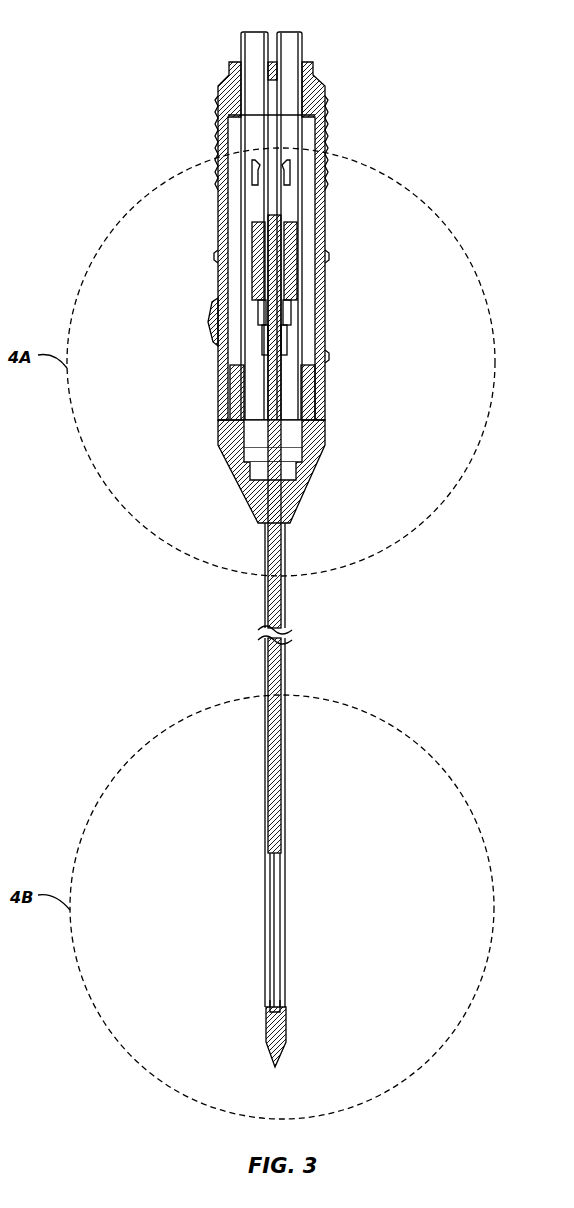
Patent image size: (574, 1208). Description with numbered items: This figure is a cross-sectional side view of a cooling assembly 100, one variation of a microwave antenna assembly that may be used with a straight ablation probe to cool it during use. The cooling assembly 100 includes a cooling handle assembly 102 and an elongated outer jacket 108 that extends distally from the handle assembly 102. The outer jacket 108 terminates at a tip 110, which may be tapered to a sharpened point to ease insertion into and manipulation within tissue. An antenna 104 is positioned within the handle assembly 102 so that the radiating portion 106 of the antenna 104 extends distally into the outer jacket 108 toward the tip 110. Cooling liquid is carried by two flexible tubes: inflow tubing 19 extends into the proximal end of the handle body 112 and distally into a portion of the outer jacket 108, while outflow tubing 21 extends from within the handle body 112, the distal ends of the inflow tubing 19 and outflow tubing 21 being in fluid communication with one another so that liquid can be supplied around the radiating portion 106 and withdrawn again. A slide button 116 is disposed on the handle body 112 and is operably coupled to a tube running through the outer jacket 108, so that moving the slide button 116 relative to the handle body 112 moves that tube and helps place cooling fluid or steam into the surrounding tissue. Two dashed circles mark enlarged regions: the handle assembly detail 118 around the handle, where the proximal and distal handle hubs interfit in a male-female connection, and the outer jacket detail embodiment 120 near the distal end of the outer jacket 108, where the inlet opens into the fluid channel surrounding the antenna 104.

The cooling assembly 100 is at (457, 86).
The cooling handle assembly 102 is at (345, 302).
The antenna 104 is at (300, 432).
The radiating portion 106 is at (272, 1005).
The outer jacket 108 is at (287, 600).
The tip 110 is at (280, 1045).
The handle body 112 is at (220, 150).
The slide button 116 is at (210, 302).
The handle assembly detail 118 is at (449, 200).
The outer jacket detail embodiment 120 is at (452, 748).
The inflow tubing 19 is at (241, 42).
The outflow tubing 21 is at (302, 42).